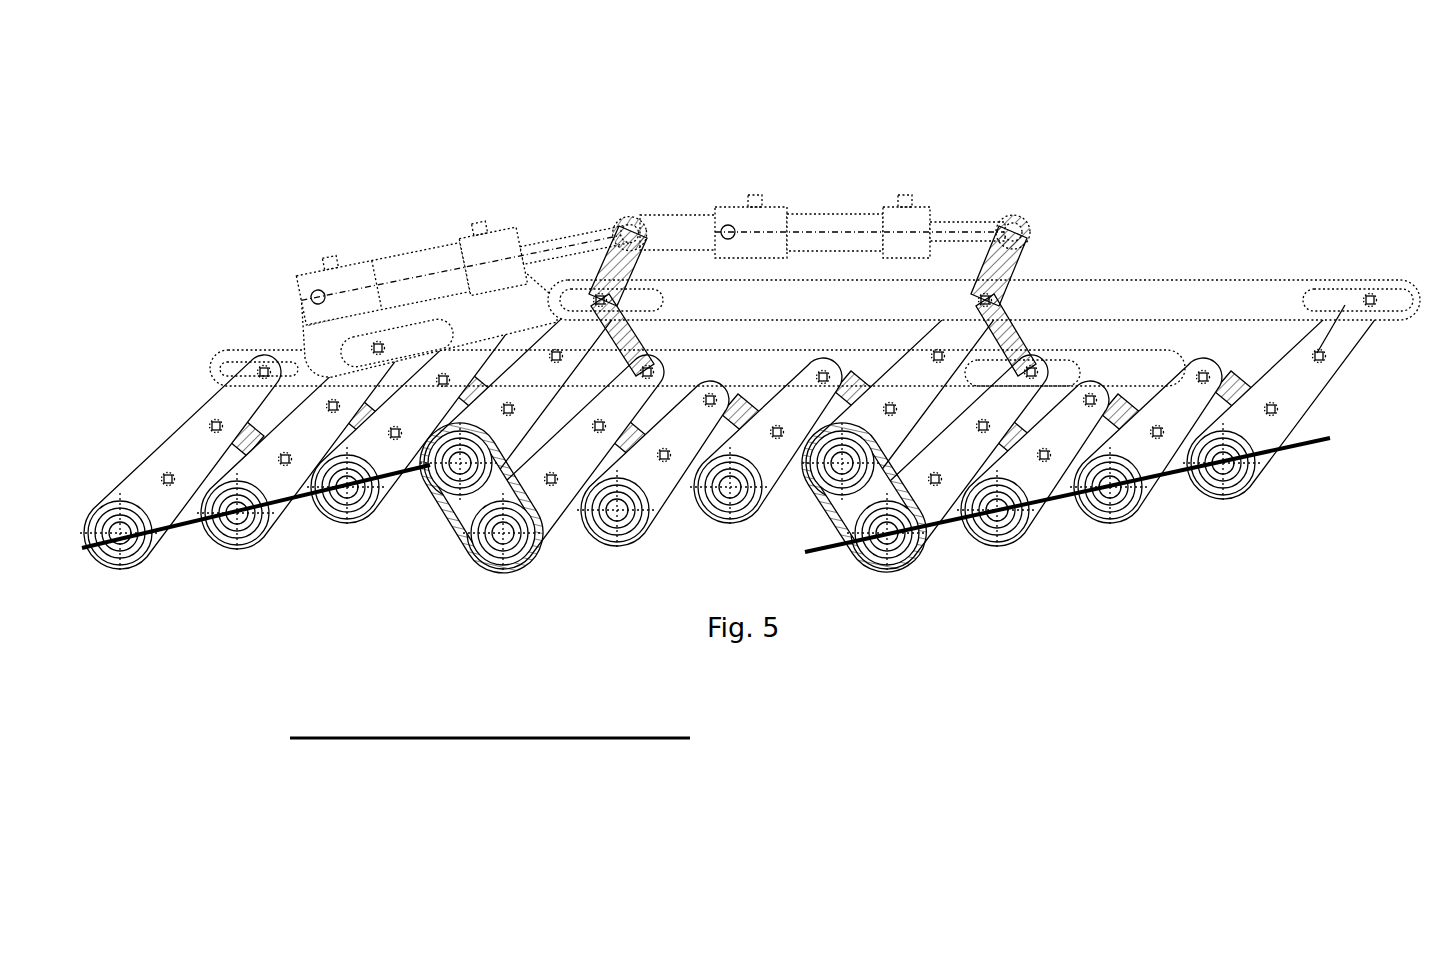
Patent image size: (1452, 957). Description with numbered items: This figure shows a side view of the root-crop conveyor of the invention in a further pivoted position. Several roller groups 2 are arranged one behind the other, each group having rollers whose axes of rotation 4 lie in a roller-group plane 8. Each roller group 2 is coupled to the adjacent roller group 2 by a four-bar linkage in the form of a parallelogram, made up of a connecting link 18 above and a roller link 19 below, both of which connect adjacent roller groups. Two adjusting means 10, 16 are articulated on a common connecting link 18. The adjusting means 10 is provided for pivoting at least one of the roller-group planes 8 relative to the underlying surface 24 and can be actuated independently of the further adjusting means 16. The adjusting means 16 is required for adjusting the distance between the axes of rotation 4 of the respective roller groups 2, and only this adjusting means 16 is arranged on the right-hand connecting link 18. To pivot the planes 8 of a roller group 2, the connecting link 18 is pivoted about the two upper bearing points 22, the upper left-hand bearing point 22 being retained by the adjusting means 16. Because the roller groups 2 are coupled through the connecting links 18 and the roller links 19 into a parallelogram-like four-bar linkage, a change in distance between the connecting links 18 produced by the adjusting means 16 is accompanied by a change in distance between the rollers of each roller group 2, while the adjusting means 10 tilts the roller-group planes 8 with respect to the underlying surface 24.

The roller group 2 is at (262, 598).
The axes of rotation 4 is at (982, 528).
The roller-group plane 8 is at (408, 476).
The adjusting means 10 is at (414, 272).
The adjusting means 16 is at (835, 227).
The connecting link 18 is at (660, 250).
The roller link 19 is at (466, 518).
The upper bearing points 22 is at (595, 297).
The underlying surface 24 is at (395, 738).